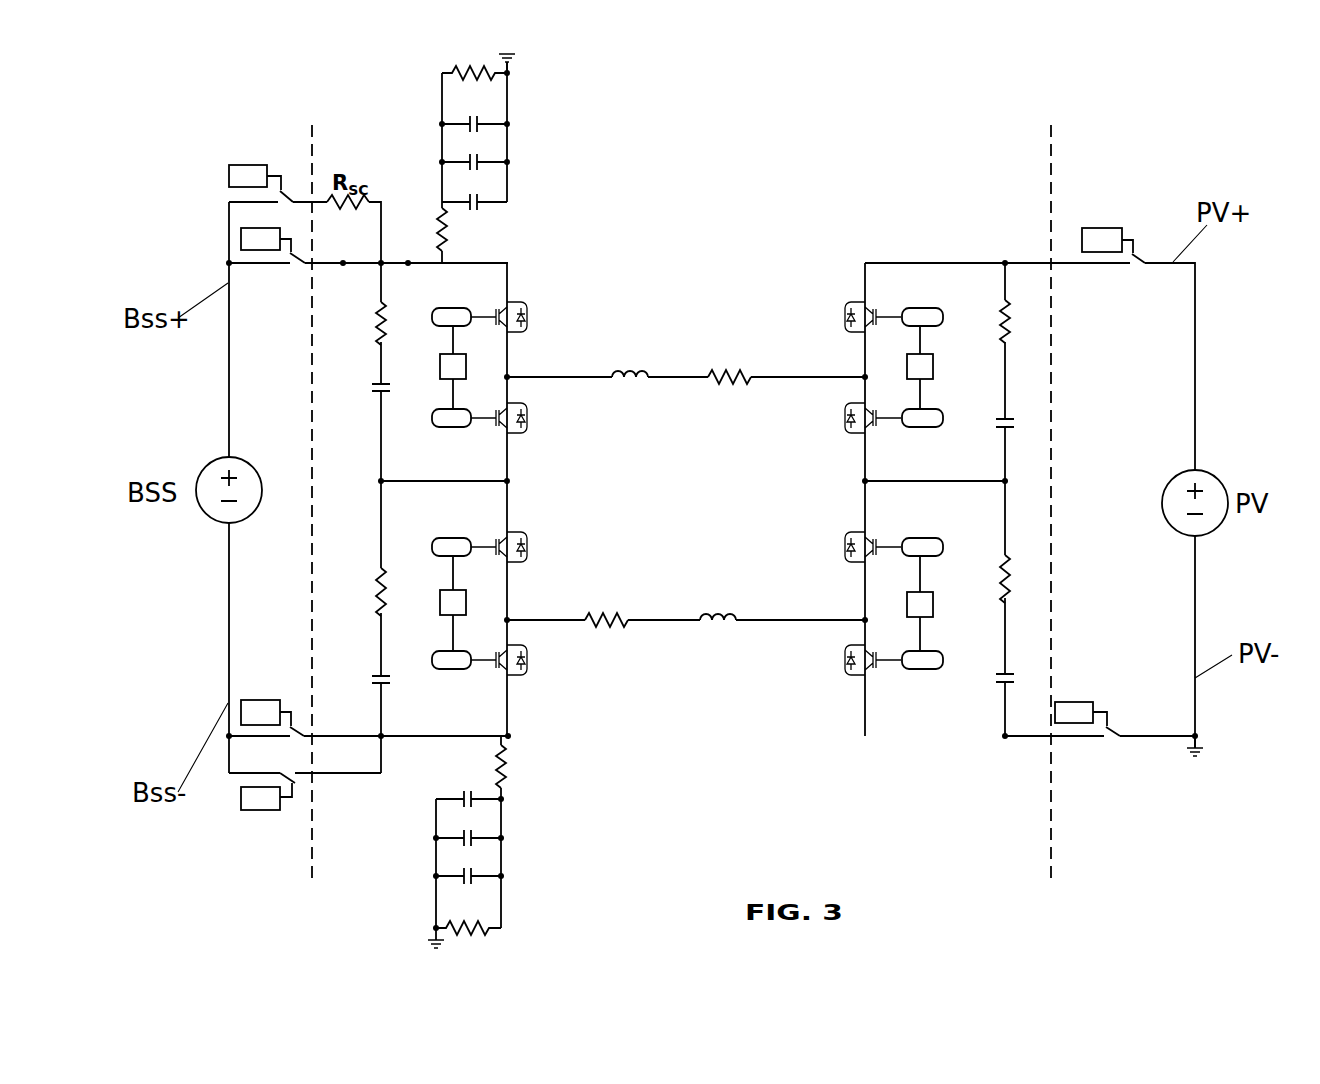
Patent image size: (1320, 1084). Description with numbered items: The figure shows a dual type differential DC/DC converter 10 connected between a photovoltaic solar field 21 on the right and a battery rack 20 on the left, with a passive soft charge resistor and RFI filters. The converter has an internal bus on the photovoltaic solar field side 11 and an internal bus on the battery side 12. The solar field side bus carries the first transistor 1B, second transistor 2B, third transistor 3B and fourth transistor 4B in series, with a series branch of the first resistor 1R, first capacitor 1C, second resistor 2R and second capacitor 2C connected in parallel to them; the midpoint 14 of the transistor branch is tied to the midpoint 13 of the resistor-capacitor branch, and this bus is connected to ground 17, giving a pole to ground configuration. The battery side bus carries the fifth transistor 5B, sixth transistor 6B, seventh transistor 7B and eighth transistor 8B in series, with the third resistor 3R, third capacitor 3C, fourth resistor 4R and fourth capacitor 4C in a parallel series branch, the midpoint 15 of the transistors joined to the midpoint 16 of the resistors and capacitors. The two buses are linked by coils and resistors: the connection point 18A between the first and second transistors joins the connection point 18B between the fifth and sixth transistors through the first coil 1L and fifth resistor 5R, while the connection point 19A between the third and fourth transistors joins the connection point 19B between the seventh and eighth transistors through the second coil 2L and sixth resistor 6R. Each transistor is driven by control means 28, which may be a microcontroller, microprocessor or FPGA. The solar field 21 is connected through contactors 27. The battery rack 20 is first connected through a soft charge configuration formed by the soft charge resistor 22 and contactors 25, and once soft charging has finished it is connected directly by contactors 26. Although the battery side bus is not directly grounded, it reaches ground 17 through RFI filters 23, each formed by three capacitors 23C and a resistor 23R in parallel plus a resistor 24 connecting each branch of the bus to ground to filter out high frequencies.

The dual type differential DC/DC converter 10 is at (880, 188).
The internal bus on the photovoltaic solar field side 11 is at (934, 539).
The internal bus on the battery side 12 is at (445, 510).
The midpoint of the branch of the capacitors and resistors 1R-1C-2R-2C 13 is at (1003, 478).
The midpoint of the branch of the four transistors 1B-4B 14 is at (862, 482).
The midpoint of the branch of the four transistors 5B-8B 15 is at (510, 480).
The midpoint of the branch of the capacitors and resistors 3R-3C-4R-4C 16 is at (378, 480).
The ground 17 is at (522, 60).
The connection point between the first transistor and the second transistor 18A is at (863, 377).
The connection point between the fifth transistor and the sixth transistor 18B is at (509, 376).
The connection point between the third transistor and the fourth transistor 19A is at (862, 620).
The connection point between the seventh transistor and the eighth transistor 19B is at (508, 618).
The battery rack 20 is at (207, 517).
The photovoltaic solar field 21 is at (1213, 473).
The soft charge resistor RSC 22 is at (338, 210).
The RFI filters 23 is at (459, 505).
The capacitors 23C is at (472, 195).
The resistor 23R is at (525, 243).
The resistor 24 is at (447, 235).
The contactors 25 is at (245, 172).
The contactors 26 is at (247, 240).
The contactors 27 is at (1100, 235).
The control means 28 is at (440, 367).
The first transistor 1B is at (922, 305).
The second transistor 2B is at (922, 432).
The third transistor 3B is at (922, 533).
The fourth transistor 4B is at (922, 673).
The fifth transistor 5B is at (451, 305).
The sixth transistor 6B is at (451, 431).
The seventh transistor 7B is at (451, 534).
The eighth transistor 8B is at (451, 674).
The first resistor 1R is at (1024, 321).
The second resistor 2R is at (1024, 579).
The third resistor 3R is at (363, 323).
The fourth resistor 4R is at (363, 592).
The fifth resistor 5R is at (729, 365).
The sixth resistor 6R is at (606, 608).
The first capacitor 1C is at (1022, 426).
The second capacitor 2C is at (1022, 681).
The third capacitor 3C is at (365, 386).
The fourth capacitor 4C is at (365, 681).
The first coil 1L is at (630, 360).
The second coil 2L is at (719, 604).